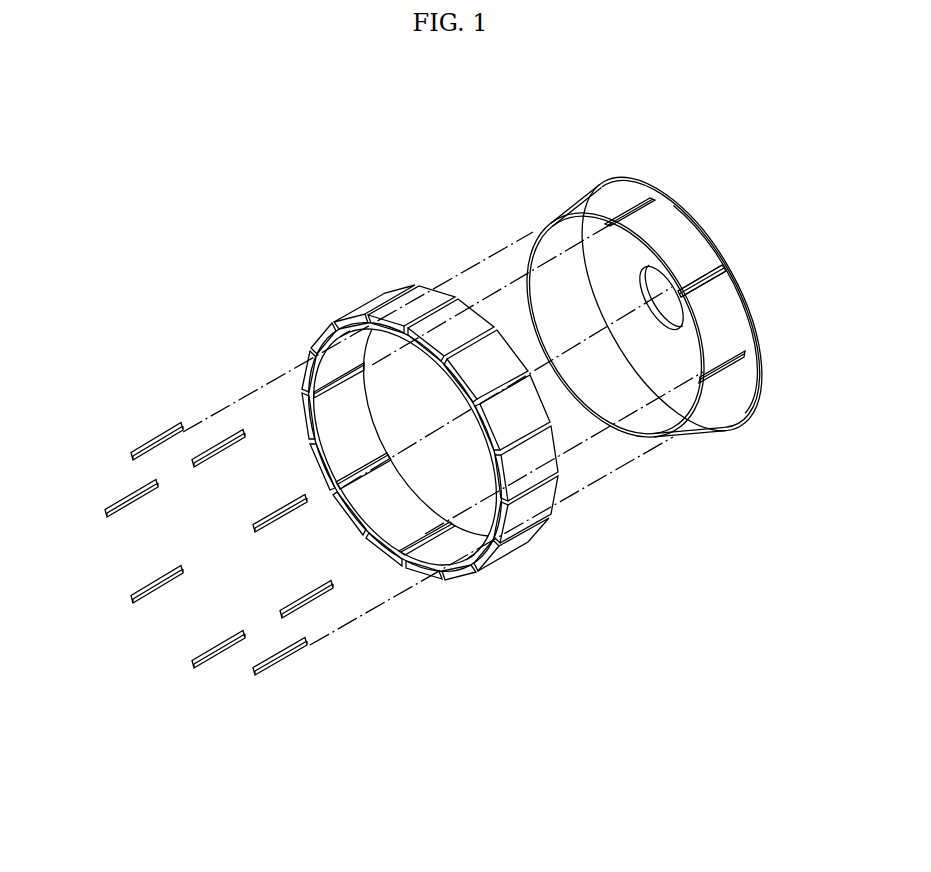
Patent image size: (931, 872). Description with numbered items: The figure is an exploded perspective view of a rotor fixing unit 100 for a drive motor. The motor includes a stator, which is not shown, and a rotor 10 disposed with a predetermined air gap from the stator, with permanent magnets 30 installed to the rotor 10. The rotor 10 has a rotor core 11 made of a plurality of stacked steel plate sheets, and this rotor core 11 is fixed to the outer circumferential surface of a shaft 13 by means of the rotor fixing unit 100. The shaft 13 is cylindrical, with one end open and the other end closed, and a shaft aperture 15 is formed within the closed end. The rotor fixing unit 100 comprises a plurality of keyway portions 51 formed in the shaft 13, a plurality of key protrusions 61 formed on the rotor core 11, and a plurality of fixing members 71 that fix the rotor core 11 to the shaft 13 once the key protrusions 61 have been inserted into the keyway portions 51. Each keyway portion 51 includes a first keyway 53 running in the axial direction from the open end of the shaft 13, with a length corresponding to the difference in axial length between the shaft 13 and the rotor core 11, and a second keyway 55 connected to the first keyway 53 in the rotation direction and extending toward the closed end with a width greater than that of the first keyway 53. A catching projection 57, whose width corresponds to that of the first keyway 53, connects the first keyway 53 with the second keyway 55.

The rotor fixing unit 100 is at (348, 132).
The rotor 10 is at (488, 147).
The rotor core 11 is at (375, 288).
The shaft 13 is at (558, 206).
The shaft aperture 15 is at (640, 270).
The permanent magnets 30 is at (493, 550).
The keyway portions 51 is at (702, 269).
The first keyway 53 is at (686, 296).
The second keyway 55 is at (725, 268).
The catching projection 57 is at (706, 286).
The key protrusions 61 is at (420, 545).
The fixing members 71 is at (213, 666).